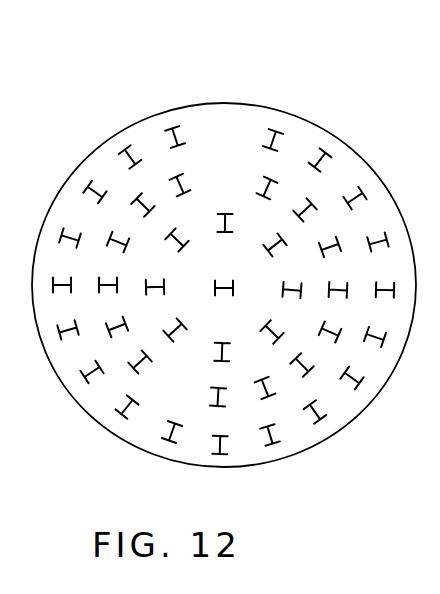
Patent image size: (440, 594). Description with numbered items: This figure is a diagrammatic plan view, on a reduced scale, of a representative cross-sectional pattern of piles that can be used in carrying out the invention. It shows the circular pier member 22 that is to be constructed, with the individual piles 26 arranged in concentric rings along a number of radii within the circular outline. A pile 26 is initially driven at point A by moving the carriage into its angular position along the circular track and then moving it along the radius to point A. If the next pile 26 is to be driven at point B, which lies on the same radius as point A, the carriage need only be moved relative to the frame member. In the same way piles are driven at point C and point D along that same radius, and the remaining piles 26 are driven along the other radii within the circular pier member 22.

The circular pier member 22 is at (105, 396).
The pile 26 is at (178, 137).
The point A is at (306, 207).
The point B is at (270, 244).
The point C is at (171, 326).
The point D is at (143, 363).